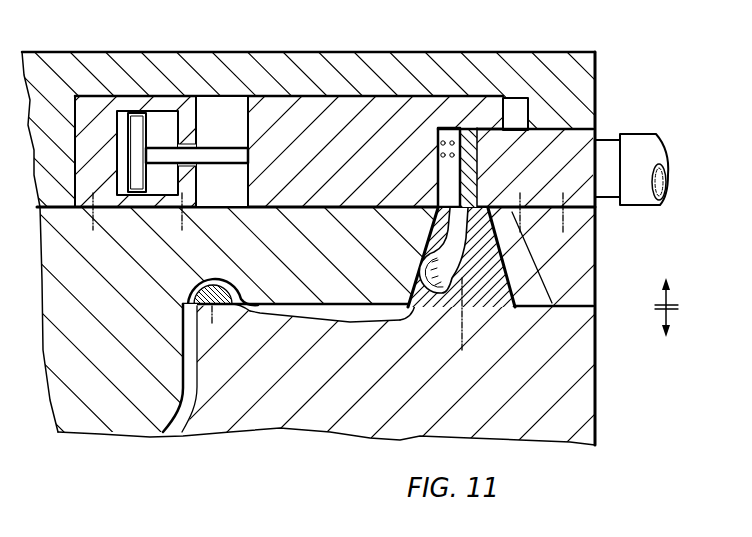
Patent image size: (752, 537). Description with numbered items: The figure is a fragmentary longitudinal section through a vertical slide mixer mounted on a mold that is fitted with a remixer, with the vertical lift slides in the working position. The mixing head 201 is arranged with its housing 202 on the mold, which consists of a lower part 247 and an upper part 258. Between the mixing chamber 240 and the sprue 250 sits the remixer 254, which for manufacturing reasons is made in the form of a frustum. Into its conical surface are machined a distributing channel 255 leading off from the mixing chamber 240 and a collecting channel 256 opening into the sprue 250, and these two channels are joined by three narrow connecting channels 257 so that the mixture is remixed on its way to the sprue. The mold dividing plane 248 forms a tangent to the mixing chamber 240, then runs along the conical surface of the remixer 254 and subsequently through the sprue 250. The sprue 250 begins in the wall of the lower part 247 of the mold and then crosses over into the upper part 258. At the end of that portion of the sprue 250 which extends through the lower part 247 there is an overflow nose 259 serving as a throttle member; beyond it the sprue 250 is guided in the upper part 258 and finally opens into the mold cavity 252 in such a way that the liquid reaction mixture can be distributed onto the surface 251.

The mixing head 201 is at (78, 47).
The housing 202 is at (157, 62).
The mixing chamber 240 is at (446, 128).
The lower part of the mold 247 is at (586, 418).
The mold dividing plane 248 is at (385, 298).
The sprue 250 is at (363, 315).
The surface 251 is at (188, 389).
The mold cavity 252 is at (177, 424).
The remixer 254 is at (492, 263).
The distributing channel 255 is at (431, 221).
The collecting channel 256 is at (417, 310).
The connecting channels 257 is at (465, 280).
The upper part of the mold 258 is at (566, 232).
The overflow nose 259 is at (214, 310).